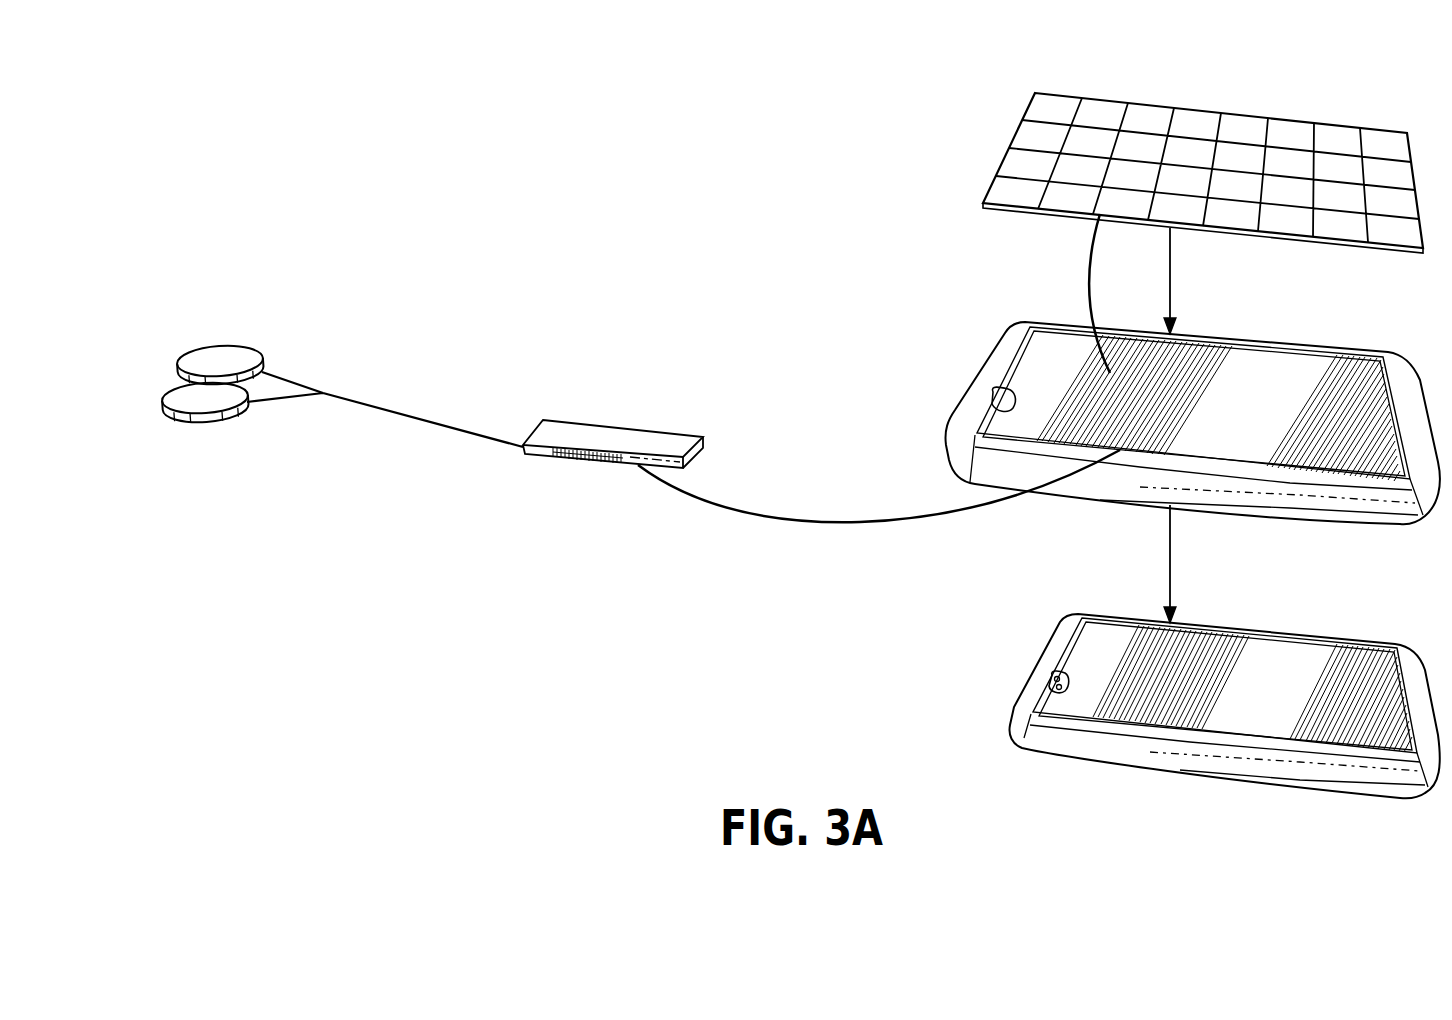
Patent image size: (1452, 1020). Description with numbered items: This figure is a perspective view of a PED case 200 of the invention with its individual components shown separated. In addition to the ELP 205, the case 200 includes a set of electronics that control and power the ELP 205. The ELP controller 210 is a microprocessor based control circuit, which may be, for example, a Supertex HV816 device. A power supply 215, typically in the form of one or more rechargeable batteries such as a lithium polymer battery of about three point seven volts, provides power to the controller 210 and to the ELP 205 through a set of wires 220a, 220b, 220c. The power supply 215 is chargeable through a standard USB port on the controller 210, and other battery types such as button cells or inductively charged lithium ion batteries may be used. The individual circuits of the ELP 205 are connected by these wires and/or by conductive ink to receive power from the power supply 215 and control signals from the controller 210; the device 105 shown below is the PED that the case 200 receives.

The mobile device 105 is at (1080, 614).
The case 200 is at (1020, 326).
The ELP 205 is at (1035, 96).
The ELP controller 210 is at (583, 425).
The power supply 215 is at (197, 452).
The wire 220a is at (287, 380).
The wire 220b is at (734, 505).
The wire 220c is at (1058, 283).